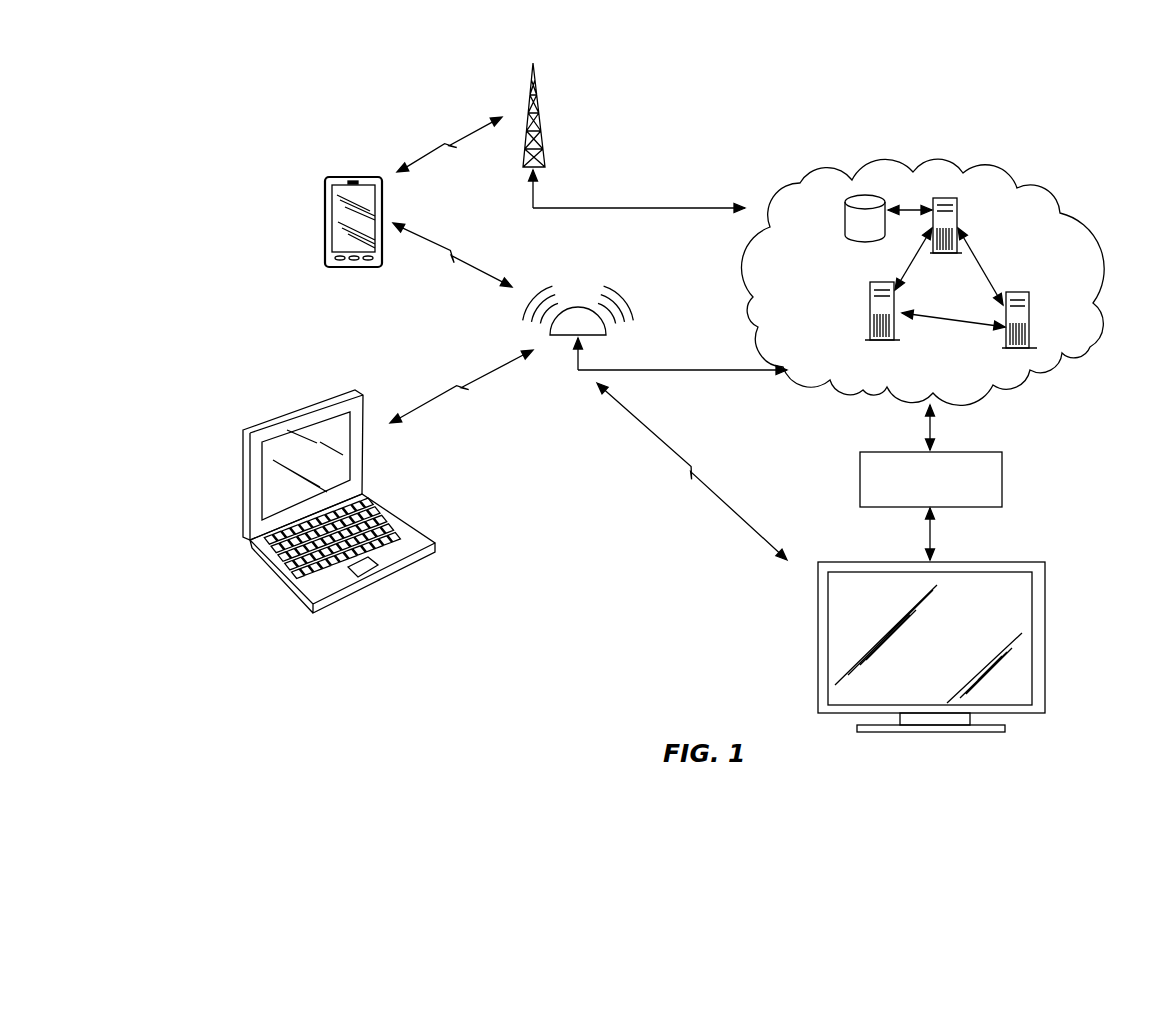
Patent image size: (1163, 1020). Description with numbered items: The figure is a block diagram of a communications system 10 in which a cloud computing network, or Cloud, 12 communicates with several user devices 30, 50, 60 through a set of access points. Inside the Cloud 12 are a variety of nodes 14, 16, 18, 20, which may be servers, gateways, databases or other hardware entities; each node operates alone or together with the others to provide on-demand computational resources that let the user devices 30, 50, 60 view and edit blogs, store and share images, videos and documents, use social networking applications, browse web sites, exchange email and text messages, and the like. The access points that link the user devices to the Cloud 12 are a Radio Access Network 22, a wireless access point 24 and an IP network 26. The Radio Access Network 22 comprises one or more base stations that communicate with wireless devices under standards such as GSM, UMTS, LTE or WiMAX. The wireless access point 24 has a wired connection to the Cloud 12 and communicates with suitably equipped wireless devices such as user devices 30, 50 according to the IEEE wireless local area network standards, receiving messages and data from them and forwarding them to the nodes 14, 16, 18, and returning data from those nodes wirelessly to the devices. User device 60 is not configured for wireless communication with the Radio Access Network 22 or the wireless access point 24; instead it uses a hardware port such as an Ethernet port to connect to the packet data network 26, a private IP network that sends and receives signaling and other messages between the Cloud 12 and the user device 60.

The communications system 10 is at (1025, 113).
The cloud computing network 12 is at (831, 361).
The node 14 is at (870, 308).
The node 16 is at (1028, 303).
The node 18 is at (957, 208).
The node 20 is at (843, 218).
The Radio Access Network 22 is at (545, 137).
The wireless access point 24 is at (607, 327).
The IP network 26 is at (921, 497).
The user device 30 is at (312, 177).
The user device 50 is at (215, 445).
The user device 60 is at (1073, 560).